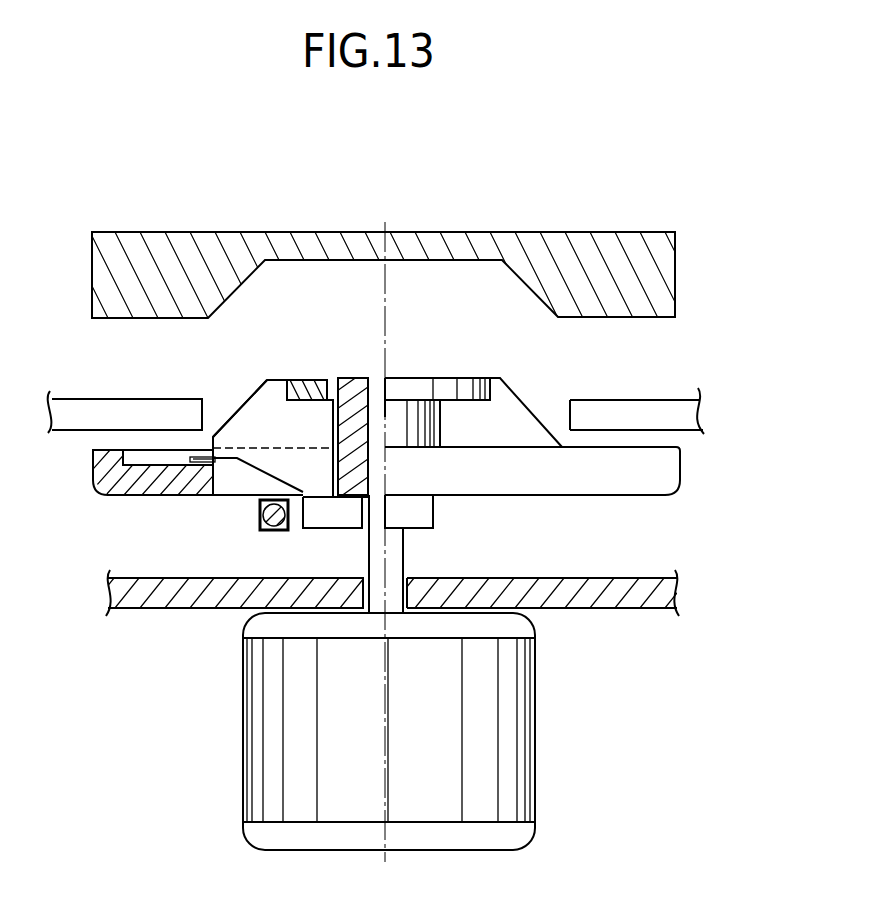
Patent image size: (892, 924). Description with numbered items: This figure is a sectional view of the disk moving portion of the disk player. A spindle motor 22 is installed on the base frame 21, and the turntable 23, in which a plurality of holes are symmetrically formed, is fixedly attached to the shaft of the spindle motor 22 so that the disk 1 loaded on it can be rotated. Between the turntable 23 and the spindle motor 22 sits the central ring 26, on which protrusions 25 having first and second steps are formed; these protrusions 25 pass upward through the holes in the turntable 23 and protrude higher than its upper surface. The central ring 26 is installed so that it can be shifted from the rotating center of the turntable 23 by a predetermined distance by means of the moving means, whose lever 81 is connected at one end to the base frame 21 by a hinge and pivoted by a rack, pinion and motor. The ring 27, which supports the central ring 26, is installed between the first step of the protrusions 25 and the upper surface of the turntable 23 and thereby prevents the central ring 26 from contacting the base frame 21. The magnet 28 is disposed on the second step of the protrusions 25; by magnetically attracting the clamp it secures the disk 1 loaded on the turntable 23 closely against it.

The disk 1 is at (657, 405).
The base frame 21 is at (655, 592).
The spindle motor 22 is at (527, 712).
The turntable 23 is at (668, 478).
The protrusions 25 is at (262, 390).
The central ring 26 is at (237, 402).
The ring 27 is at (168, 492).
The magnet 28 is at (312, 383).
The lever 81 is at (260, 512).